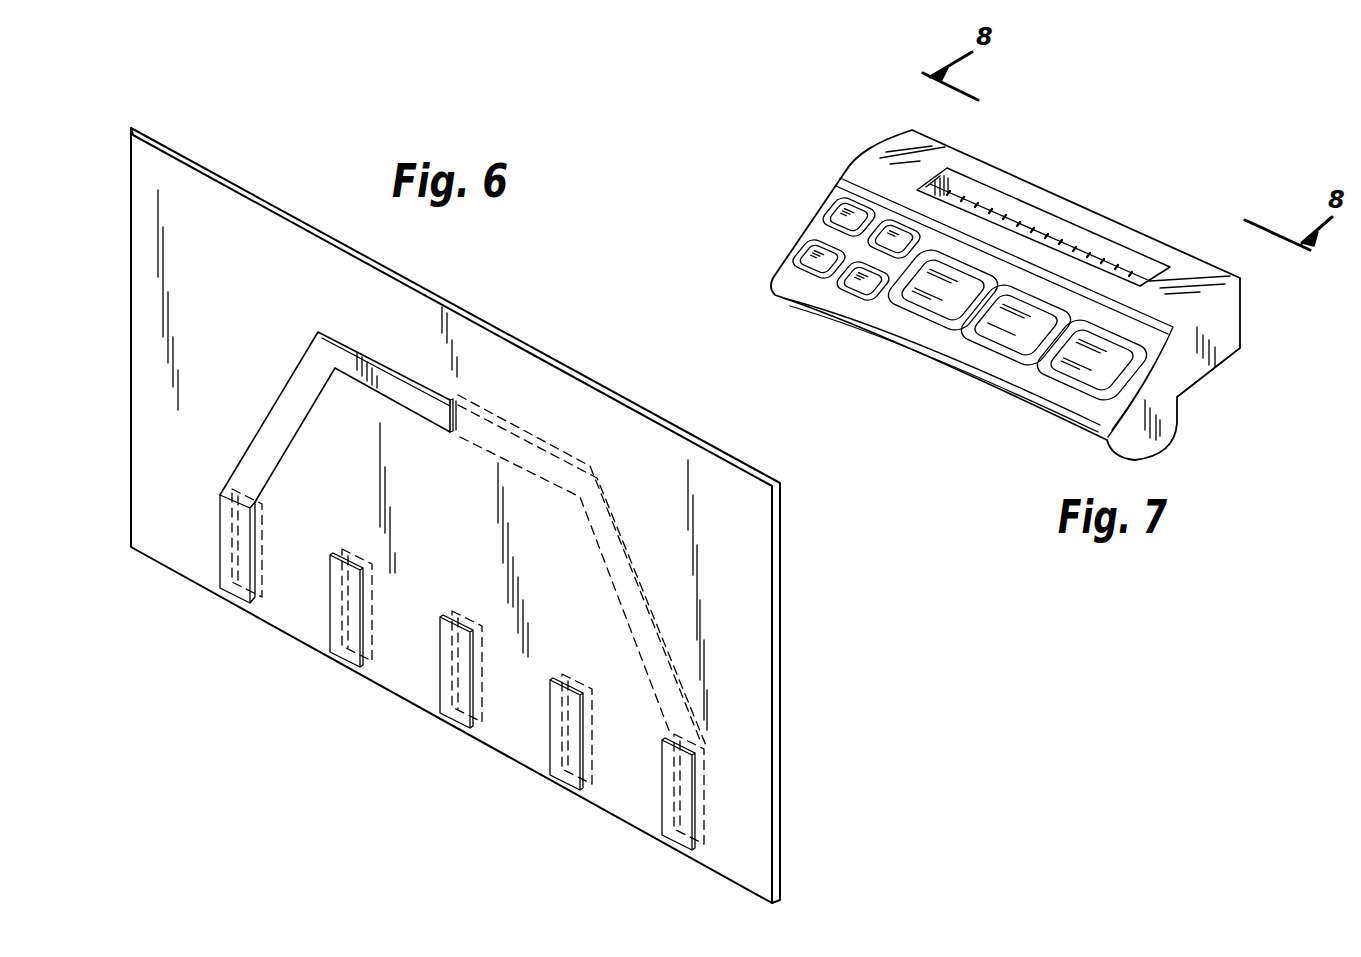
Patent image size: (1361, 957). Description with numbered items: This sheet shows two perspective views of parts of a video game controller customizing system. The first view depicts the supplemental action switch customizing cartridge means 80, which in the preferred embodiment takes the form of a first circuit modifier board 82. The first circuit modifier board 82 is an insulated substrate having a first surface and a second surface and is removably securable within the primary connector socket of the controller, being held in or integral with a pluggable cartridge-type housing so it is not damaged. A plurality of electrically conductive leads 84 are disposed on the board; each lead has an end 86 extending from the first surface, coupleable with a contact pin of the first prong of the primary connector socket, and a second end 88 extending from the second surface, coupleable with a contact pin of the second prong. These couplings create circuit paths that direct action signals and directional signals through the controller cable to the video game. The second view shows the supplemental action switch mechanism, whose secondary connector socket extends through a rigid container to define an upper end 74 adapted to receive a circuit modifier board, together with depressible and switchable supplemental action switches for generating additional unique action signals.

In FIG. 7, the upper end 74 is at (1073, 235).
In FIG. 7, the supplemental action switch customizing cartridge means 80 is at (1013, 207).
In FIG. 6, the first circuit modifier board 82 is at (775, 600).
In FIG. 6, the electrically conductive leads 84 is at (275, 410).
In FIG. 7, the electrically conductive leads 84 is at (860, 287).
In FIG. 6, the end 86 is at (243, 577).
In FIG. 6, the second end 88 is at (705, 748).